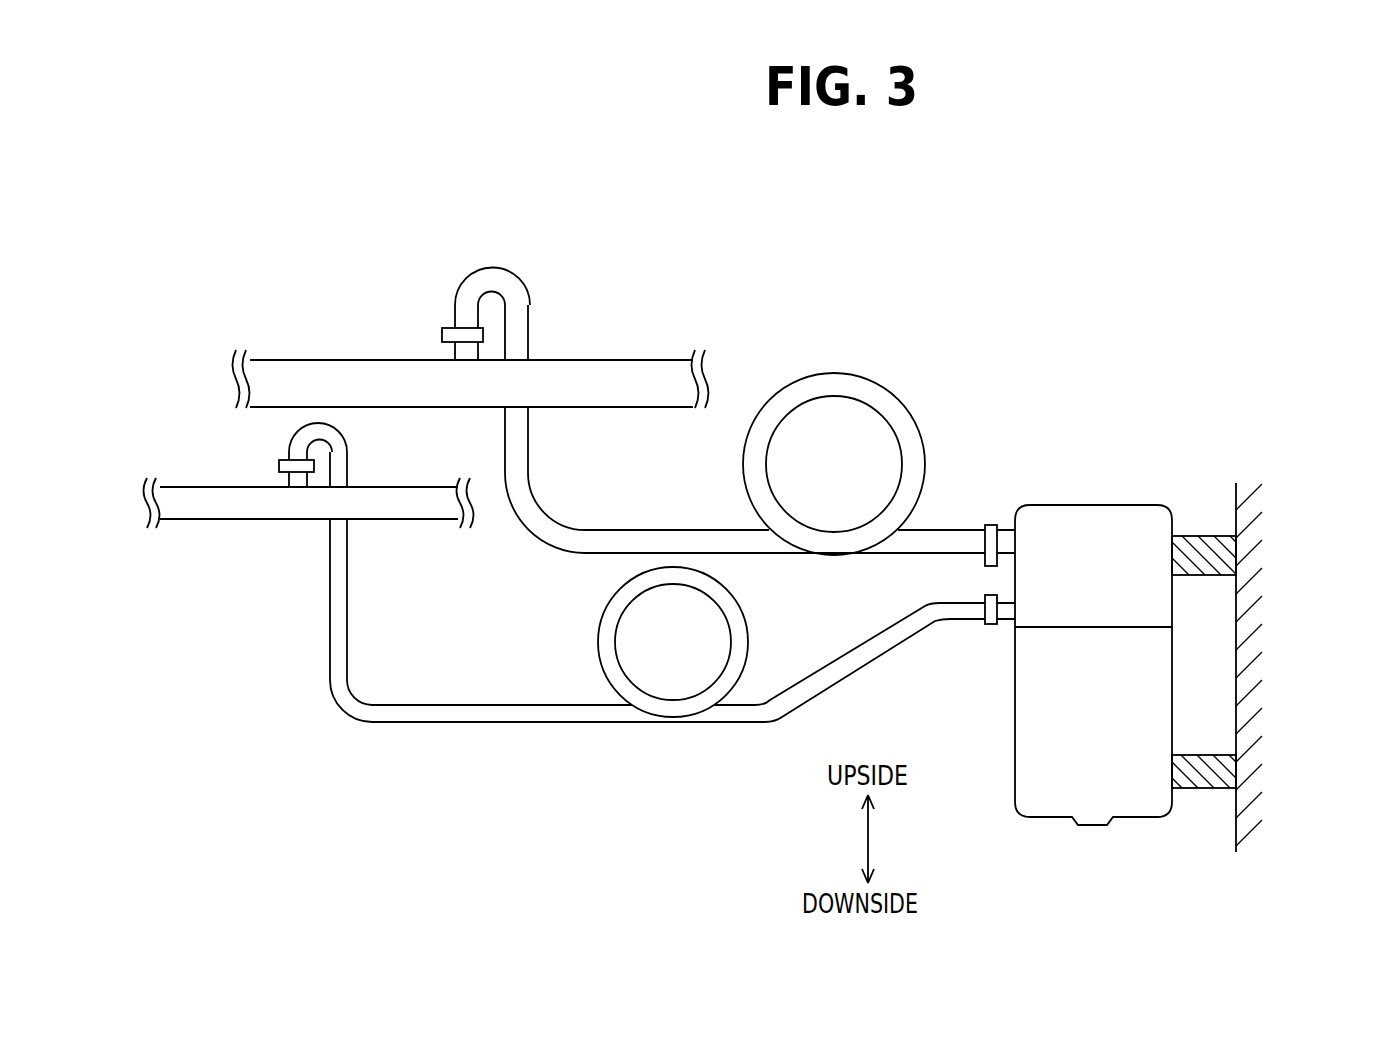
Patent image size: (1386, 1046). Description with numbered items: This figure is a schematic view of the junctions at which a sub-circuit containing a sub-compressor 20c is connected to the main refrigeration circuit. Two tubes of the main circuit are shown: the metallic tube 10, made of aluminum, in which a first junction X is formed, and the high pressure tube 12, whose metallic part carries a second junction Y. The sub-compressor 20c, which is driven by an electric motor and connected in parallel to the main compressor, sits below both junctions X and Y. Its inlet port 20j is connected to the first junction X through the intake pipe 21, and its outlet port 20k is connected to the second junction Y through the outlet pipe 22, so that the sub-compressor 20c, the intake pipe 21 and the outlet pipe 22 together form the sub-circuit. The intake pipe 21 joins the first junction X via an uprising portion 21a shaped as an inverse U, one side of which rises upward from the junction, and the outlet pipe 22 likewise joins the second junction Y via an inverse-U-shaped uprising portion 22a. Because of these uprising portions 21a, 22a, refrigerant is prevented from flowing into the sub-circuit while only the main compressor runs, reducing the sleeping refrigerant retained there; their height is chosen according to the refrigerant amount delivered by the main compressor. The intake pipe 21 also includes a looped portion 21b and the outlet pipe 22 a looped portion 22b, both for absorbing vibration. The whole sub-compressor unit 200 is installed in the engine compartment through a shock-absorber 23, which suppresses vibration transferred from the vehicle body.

The metallic tube 10 is at (325, 372).
The high pressure tube 12 is at (205, 510).
The intake pipe 21 is at (538, 541).
The uprising portion 21a is at (507, 284).
The looped portion 21b is at (806, 383).
The outlet pipe 22 is at (396, 723).
The uprising portion 22a is at (301, 438).
The looped portion 22b is at (604, 648).
The first junction X is at (450, 353).
The second junction Y is at (295, 488).
The inlet port 20j is at (1005, 545).
The outlet port 20k is at (1010, 612).
The sub-compressor 20c is at (1110, 540).
The shock-absorber 23 is at (1200, 542).
The sub-compressor unit 200 is at (1190, 626).